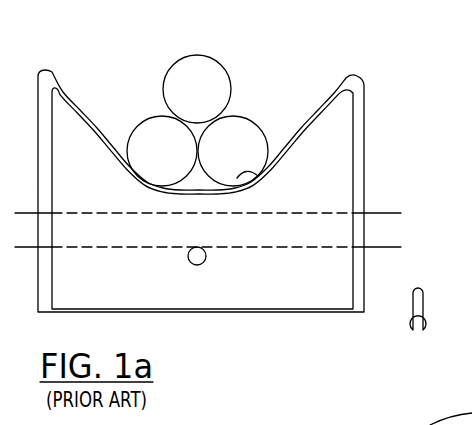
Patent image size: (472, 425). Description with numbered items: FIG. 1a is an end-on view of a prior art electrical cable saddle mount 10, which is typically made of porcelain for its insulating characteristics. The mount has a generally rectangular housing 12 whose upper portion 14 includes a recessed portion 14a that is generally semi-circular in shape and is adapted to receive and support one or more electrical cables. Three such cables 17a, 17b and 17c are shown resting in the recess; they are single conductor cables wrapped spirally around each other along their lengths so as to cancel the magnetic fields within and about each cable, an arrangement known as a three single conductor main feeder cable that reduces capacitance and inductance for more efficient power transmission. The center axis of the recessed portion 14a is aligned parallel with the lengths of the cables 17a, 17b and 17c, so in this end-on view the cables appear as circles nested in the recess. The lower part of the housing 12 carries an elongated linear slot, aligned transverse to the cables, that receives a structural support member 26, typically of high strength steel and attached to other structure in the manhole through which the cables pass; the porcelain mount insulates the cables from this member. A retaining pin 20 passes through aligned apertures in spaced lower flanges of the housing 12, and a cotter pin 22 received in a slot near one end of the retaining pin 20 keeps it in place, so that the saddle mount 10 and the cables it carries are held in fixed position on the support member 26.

The cable saddle mount 10 is at (356, 325).
The housing 12 is at (259, 238).
The upper portion 14 is at (353, 75).
The recessed portion 14a is at (192, 195).
The electrical cable 17a is at (143, 138).
The electrical cable 17b is at (248, 128).
The electrical cable 17c is at (185, 70).
The retaining pin 20 is at (205, 262).
The cotter pin 22 is at (425, 313).
The support member 26 is at (306, 245).